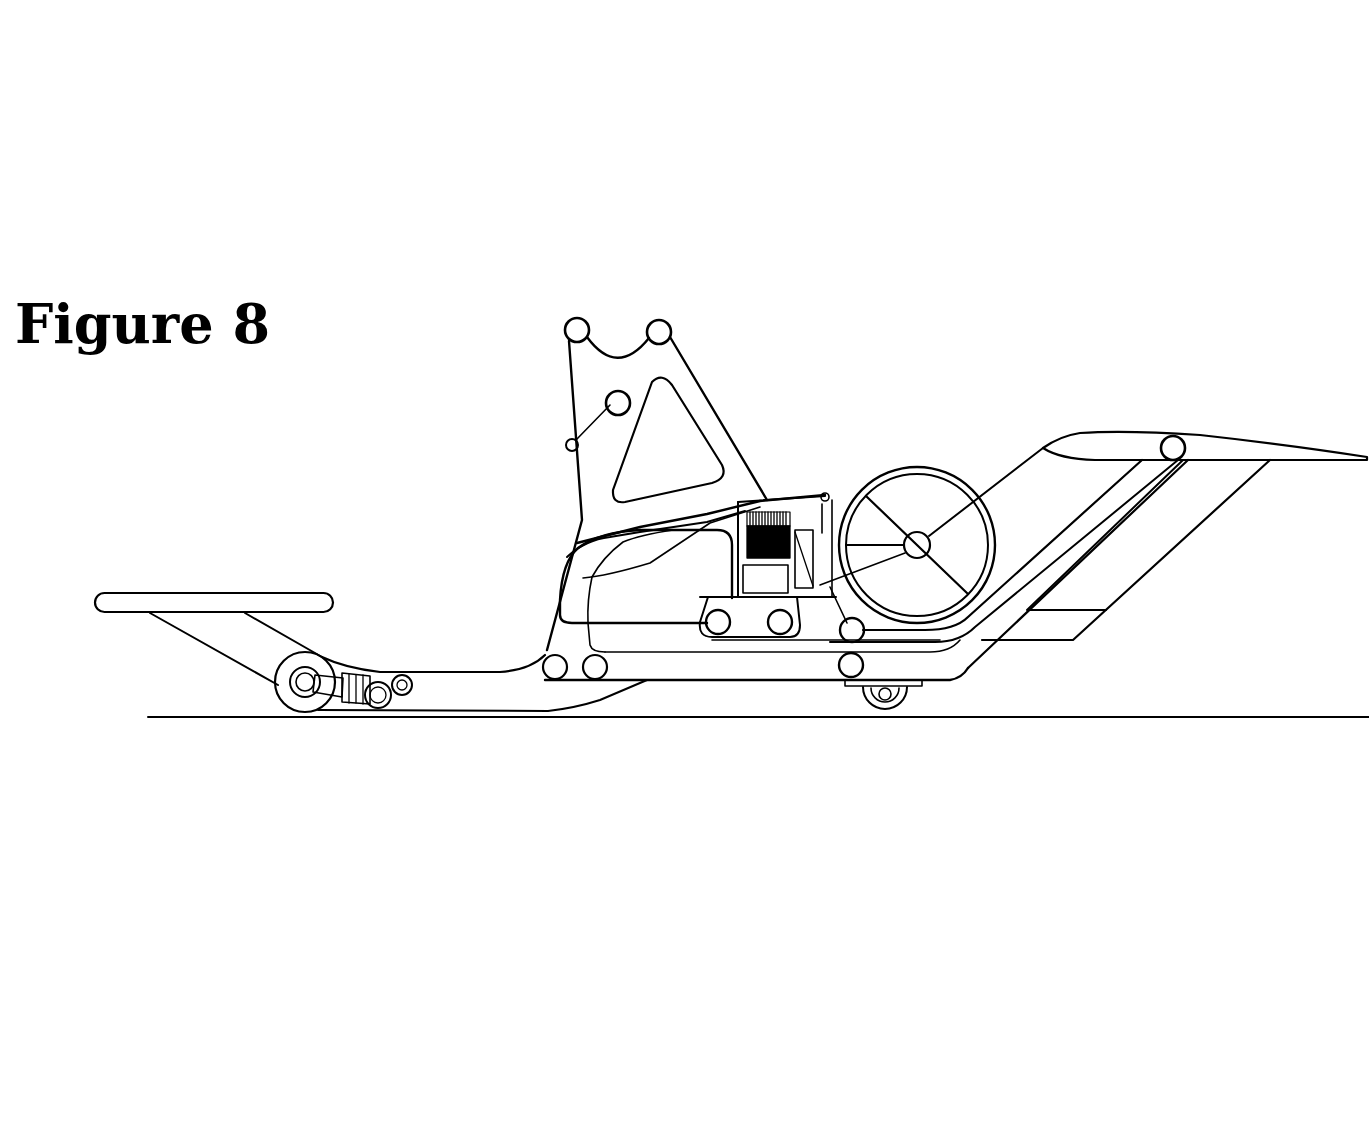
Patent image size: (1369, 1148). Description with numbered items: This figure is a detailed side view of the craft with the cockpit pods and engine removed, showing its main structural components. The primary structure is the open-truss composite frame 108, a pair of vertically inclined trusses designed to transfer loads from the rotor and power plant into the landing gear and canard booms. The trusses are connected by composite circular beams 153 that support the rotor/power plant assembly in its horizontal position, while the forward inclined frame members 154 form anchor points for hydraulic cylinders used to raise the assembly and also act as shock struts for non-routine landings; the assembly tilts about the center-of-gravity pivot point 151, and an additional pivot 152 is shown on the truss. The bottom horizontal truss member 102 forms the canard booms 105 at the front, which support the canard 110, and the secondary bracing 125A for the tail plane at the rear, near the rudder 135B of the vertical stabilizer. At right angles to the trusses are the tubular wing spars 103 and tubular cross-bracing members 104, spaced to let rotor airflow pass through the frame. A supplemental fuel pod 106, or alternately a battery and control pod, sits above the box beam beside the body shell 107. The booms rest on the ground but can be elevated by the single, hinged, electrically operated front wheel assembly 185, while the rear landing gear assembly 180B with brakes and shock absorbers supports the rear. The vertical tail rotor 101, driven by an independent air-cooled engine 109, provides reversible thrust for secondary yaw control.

The tail rotor 101 is at (935, 463).
The bottom horizontal truss member 102 is at (756, 660).
The tubular wing spars 103 is at (783, 633).
The tubular cross-bracing members 104 is at (543, 660).
The canard booms 105 is at (482, 683).
The supplemental fuel pod 106 is at (582, 523).
The body shell 107 is at (583, 578).
The open-truss composite frame 108 is at (711, 400).
The air-cooled engine 109 is at (772, 507).
The canard 110 is at (152, 592).
The secondary bracing 125A is at (965, 657).
The rudder 135B is at (1145, 557).
The pivot point 151 is at (673, 323).
The pivot 152 is at (567, 330).
The composite circular beams 153 is at (603, 402).
The forward inclined frame members 154 is at (562, 447).
The rear landing gear assembly 180B is at (917, 695).
The front wheel assembly 185 is at (283, 683).